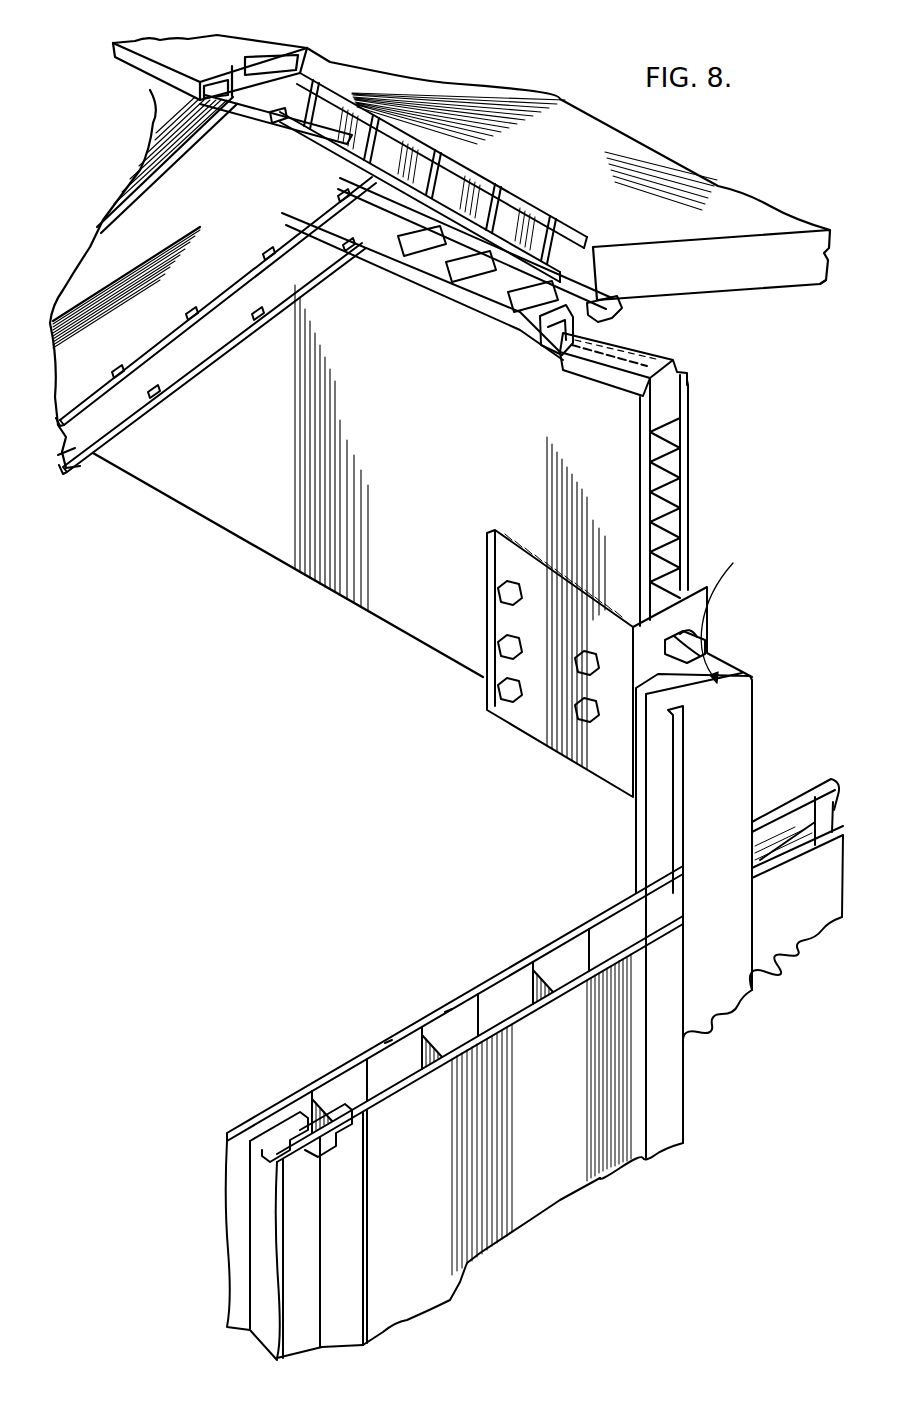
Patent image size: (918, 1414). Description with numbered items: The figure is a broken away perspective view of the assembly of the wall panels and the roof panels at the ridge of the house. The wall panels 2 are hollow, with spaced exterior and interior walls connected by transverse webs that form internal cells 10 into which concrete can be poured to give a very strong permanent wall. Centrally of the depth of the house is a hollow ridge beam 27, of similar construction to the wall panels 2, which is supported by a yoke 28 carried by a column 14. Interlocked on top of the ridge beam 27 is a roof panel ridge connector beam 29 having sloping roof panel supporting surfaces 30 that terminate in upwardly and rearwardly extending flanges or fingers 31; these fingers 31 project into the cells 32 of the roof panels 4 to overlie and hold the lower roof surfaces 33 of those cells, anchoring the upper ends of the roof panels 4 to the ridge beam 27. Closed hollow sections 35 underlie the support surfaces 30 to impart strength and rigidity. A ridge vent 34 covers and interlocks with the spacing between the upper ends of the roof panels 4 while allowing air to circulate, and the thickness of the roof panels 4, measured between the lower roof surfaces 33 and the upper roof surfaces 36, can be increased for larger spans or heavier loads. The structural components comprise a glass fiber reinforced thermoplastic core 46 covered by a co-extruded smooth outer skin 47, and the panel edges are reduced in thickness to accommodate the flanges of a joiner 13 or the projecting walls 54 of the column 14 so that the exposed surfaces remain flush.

The wall panel 2 is at (665, 1122).
The roof panel 4 is at (103, 262).
The internal cell 10 is at (517, 990).
The joiner 13 is at (357, 1233).
The column 14 is at (750, 760).
The ridge beam 27 is at (690, 475).
The yoke 28 is at (547, 707).
The roof panel ridge connector beam 29 is at (468, 327).
The roof panel supporting surface 30 is at (618, 318).
The flange or finger 31 is at (520, 265).
The roof panel cell 32 is at (450, 173).
The lower roof surface 33 is at (337, 160).
The ridge vent 34 is at (283, 42).
The closed hollow section 35 is at (640, 325).
The upper roof surface 36 is at (73, 387).
The core or substrate 46 is at (447, 1013).
The outer skin 47 is at (390, 1043).
The projecting wall 54 is at (747, 675).